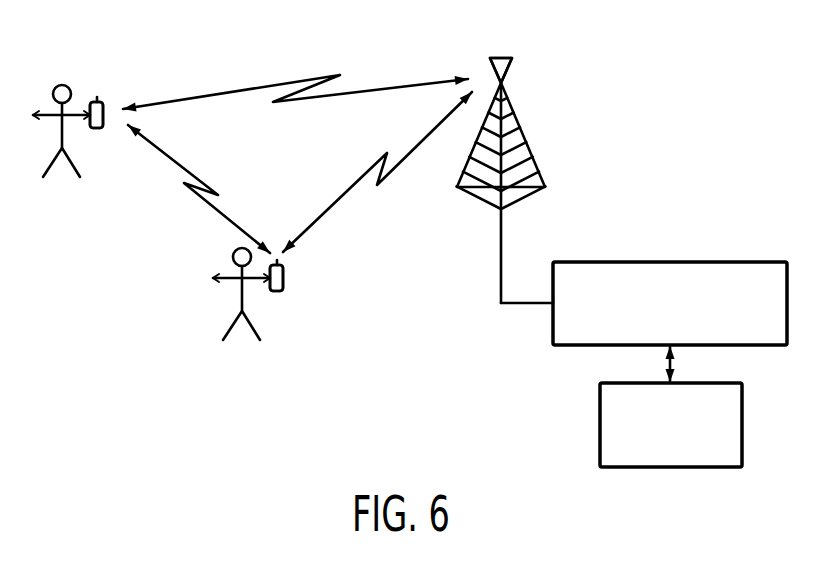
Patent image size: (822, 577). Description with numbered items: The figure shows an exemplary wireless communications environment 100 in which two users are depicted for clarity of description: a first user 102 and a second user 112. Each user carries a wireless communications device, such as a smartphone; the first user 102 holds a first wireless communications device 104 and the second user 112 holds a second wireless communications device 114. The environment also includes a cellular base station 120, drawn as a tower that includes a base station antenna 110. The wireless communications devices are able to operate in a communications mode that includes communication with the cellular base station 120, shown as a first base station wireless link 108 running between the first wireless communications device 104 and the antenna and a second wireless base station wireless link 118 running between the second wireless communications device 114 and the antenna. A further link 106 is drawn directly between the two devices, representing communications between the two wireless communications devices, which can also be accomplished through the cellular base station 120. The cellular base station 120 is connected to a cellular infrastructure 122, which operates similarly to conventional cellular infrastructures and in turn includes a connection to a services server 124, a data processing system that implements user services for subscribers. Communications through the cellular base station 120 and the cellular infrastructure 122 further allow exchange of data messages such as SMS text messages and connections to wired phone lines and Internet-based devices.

The wireless communications environment 100 is at (62, 384).
The first user 102 is at (263, 384).
The first wireless communications device 104 is at (284, 278).
The device-to-device communication link 106 is at (207, 187).
The first base station wireless link 108 is at (337, 200).
The base station antenna 110 is at (508, 70).
The second user 112 is at (82, 217).
The second wireless communications device 114 is at (93, 102).
The second wireless base station wireless link 118 is at (232, 90).
The cellular base station 120 is at (590, 243).
The cellular infrastructure 122 is at (667, 262).
The services server 124 is at (670, 467).